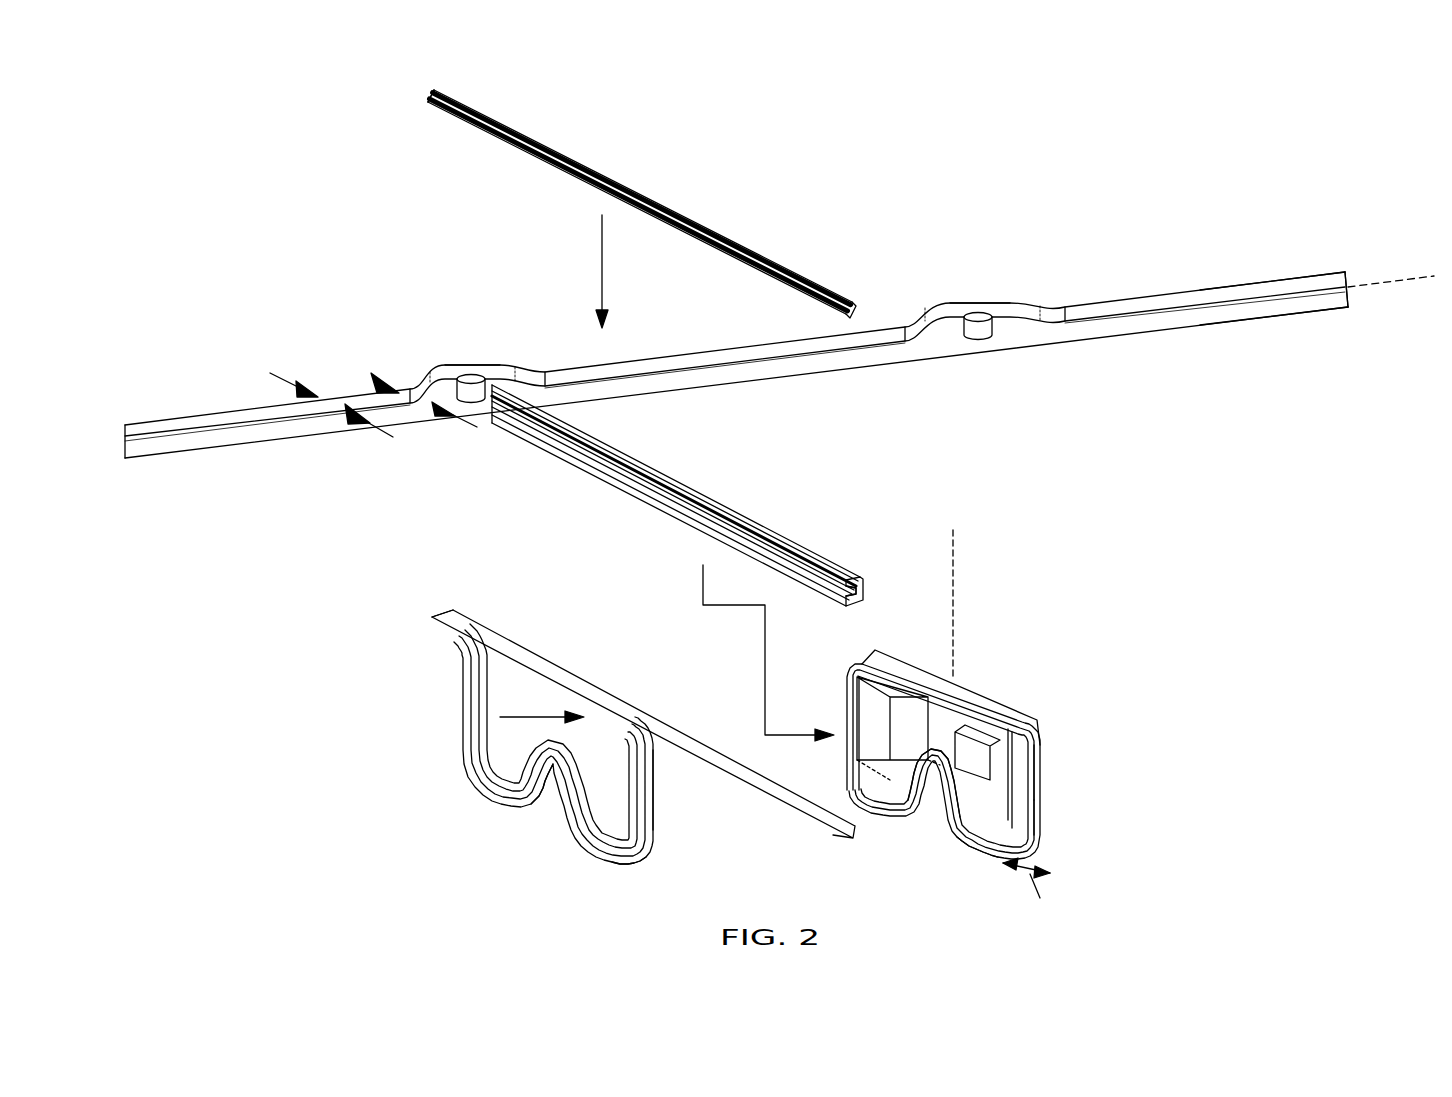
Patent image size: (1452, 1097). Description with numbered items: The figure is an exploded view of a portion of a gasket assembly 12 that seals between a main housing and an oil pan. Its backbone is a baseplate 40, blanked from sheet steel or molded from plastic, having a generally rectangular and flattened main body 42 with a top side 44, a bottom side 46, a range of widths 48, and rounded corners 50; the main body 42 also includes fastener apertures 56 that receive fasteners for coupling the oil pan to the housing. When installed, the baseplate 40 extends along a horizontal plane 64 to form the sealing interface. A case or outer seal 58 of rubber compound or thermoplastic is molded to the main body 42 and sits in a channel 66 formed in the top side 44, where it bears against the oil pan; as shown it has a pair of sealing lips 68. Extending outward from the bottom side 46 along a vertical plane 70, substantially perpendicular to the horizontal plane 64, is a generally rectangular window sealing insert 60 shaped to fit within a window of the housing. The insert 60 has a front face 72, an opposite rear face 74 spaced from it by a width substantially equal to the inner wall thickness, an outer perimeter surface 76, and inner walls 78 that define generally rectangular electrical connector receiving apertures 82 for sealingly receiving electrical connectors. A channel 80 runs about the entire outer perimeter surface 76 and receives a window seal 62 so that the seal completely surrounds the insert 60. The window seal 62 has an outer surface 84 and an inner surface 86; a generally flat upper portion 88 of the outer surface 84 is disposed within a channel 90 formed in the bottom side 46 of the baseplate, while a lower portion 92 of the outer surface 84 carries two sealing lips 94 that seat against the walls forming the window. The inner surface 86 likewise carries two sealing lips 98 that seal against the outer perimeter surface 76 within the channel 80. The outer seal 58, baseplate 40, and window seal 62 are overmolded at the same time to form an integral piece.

The gasket assembly 12 is at (1138, 164).
The baseplate 40 is at (779, 341).
The main body 42 is at (1328, 298).
The top side 44 is at (1264, 287).
The bottom side 46 is at (1220, 323).
The range of widths 48 is at (380, 378).
The rounded corners 50 is at (450, 366).
The fastener apertures 56 is at (473, 376).
The outer seal 58 is at (448, 105).
The window sealing insert 60 is at (960, 723).
The window seal 62 is at (597, 754).
The horizontal plane 64 is at (1378, 275).
The channel 66 is at (705, 503).
The sealing lips 68 is at (432, 91).
The vertical plane 70 is at (960, 571).
The front face 72 is at (980, 840).
The rear face 74 is at (1043, 764).
The outer perimeter surface 76 is at (1033, 829).
The inner walls 78 is at (866, 717).
The channel 80 is at (893, 658).
The electrical connector receiving apertures 82 is at (838, 746).
The outer surface 84 is at (538, 665).
The inner surface 86 is at (473, 727).
The upper portion 88 is at (403, 625).
The channel 90 is at (840, 598).
The lower portion 92 is at (665, 832).
The sealing lips 94 is at (630, 843).
The sealing lips 98 is at (571, 813).